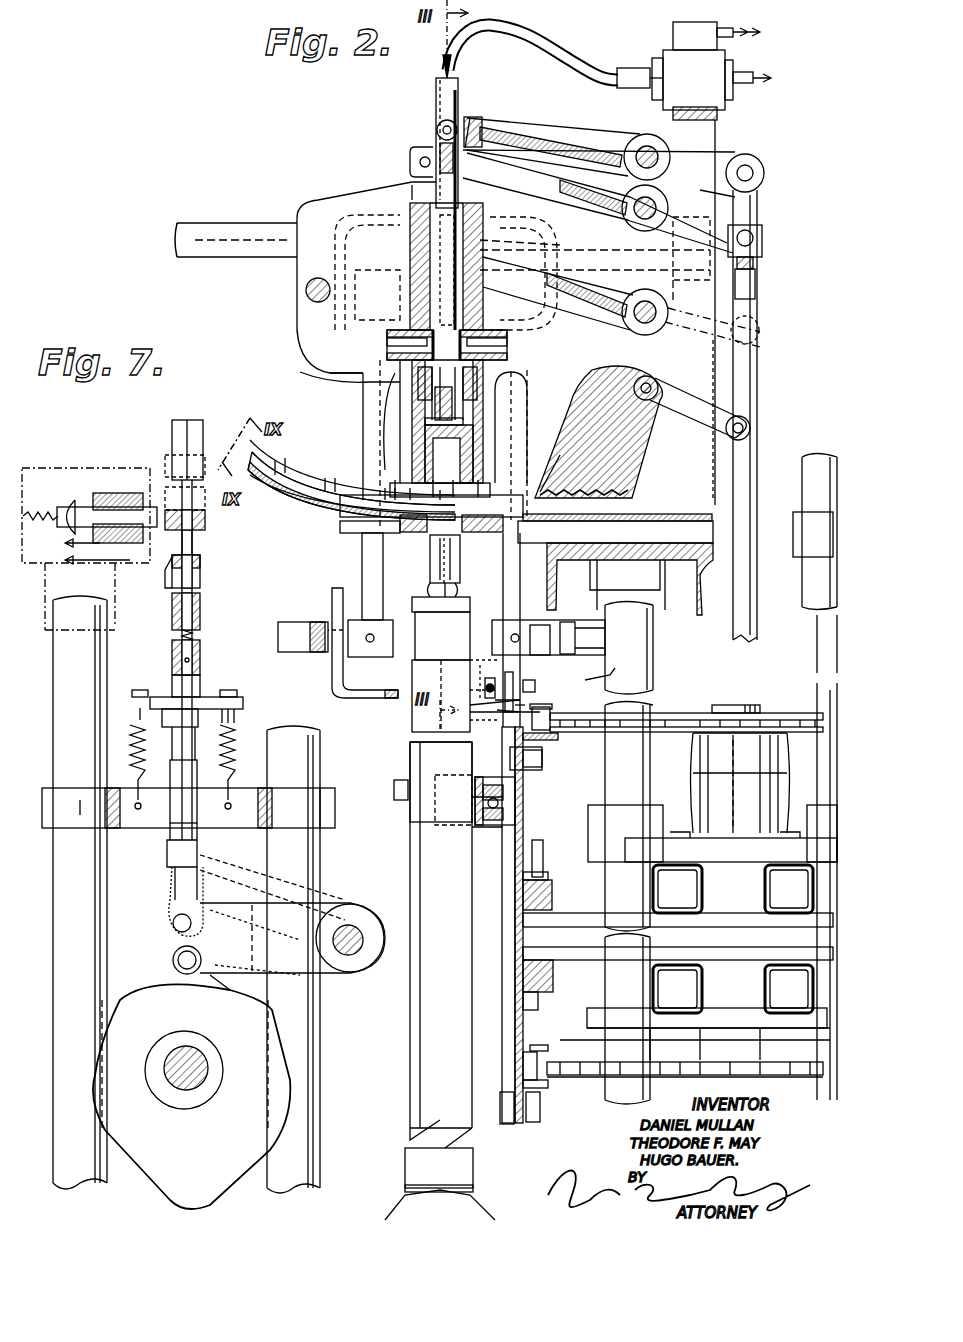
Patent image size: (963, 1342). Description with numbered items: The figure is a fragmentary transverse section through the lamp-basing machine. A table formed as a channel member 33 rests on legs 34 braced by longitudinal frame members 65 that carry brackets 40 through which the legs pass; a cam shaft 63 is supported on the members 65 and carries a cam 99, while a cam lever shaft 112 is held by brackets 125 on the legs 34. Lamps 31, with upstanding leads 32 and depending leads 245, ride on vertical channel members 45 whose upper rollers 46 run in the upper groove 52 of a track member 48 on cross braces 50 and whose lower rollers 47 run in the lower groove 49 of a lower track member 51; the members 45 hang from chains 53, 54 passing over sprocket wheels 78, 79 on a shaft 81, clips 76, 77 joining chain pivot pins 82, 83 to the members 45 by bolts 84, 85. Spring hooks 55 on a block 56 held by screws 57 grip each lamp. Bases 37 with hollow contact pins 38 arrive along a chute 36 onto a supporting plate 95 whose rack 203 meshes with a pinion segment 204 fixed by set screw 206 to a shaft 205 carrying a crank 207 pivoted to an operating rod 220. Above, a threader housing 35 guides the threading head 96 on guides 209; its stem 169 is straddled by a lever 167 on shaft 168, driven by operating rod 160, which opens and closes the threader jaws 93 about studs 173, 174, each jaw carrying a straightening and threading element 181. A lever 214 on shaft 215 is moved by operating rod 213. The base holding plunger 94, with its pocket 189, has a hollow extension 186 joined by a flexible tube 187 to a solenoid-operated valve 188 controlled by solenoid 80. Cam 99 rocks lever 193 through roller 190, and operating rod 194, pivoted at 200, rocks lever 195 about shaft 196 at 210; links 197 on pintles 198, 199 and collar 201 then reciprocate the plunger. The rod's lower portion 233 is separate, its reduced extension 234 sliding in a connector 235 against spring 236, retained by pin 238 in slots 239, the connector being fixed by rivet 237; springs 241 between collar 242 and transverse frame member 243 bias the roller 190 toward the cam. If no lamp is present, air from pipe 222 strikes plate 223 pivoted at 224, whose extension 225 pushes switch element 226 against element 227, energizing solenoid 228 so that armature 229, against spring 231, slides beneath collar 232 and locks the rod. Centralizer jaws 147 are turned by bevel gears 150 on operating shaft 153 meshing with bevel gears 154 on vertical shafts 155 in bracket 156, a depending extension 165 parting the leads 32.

In FIG. 2, the lamp 31 is at (415, 1043).
In FIG. 2, the upstanding leads 32 is at (452, 565).
In FIG. 2, the channel member 33 is at (698, 612).
In FIG. 2, the legs 34 is at (650, 688).
In FIG. 7, the legs 34 is at (70, 680).
In FIG. 2, the threader housing 35 is at (310, 210).
In FIG. 2, the chute 36 is at (268, 505).
In FIG. 2, the base 37 is at (305, 500).
In FIG. 2, the contact pins 38 is at (330, 442).
In FIG. 2, the brackets 40 is at (672, 800).
In FIG. 2, the channel members 45 is at (505, 950).
In FIG. 2, the roller 46 is at (545, 850).
In FIG. 2, the roller 47 is at (540, 1000).
In FIG. 2, the track member 48 is at (556, 895).
In FIG. 2, the lower groove 49 is at (555, 972).
In FIG. 2, the cross braces 50 is at (585, 918).
In FIG. 2, the lower track member 51 is at (570, 953).
In FIG. 2, the upper groove 52 is at (548, 874).
In FIG. 2, the chain 53 is at (555, 715).
In FIG. 2, the chain 54 is at (545, 1090).
In FIG. 2, the lamp-gripping hooks 55 is at (400, 782).
In FIG. 2, the block 56 is at (475, 850).
In FIG. 2, the screws 57 is at (520, 800).
In FIG. 7, the cam shaft 63 is at (190, 1090).
In FIG. 2, the longitudinal frame members 65 is at (700, 888).
In FIG. 2, the angular clip 76 is at (545, 758).
In FIG. 2, the angular clip 77 is at (540, 1120).
In FIG. 2, the sprocket wheel 78 is at (690, 713).
In FIG. 2, the sprocket wheel 79 is at (785, 1075).
In FIG. 2, the solenoid 80 is at (673, 25).
In FIG. 2, the shaft 81 is at (740, 706).
In FIG. 2, the pivot pin 82 is at (558, 737).
In FIG. 2, the pivot pin 83 is at (525, 1060).
In FIG. 2, the bolt 84 is at (538, 767).
In FIG. 2, the bolt 85 is at (507, 1125).
In FIG. 2, the threader jaws 93 is at (528, 395).
In FIG. 2, the base holding plunger 94 is at (418, 410).
In FIG. 2, the supporting plate 95 is at (548, 528).
In FIG. 2, the threading head 96 is at (360, 385).
In FIG. 7, the cam 99 is at (215, 1190).
In FIG. 7, the cam lever shaft 112 is at (355, 900).
In FIG. 7, the brackets 125 is at (250, 890).
In FIG. 2, the jaws 147 is at (315, 620).
In FIG. 2, the bevel gears 150 is at (360, 205).
In FIG. 2, the operating shaft 153 is at (578, 255).
In FIG. 2, the bevel gears 154 is at (305, 285).
In FIG. 2, the vertical shafts 155 is at (360, 562).
In FIG. 2, the bracket 156 is at (370, 415).
In FIG. 2, the operating rod 160 is at (760, 328).
In FIG. 2, the depending extension 165 is at (452, 550).
In FIG. 2, the lever 167 is at (640, 340).
In FIG. 2, the shaft 168 is at (640, 362).
In FIG. 2, the stem 169 is at (410, 200).
In FIG. 2, the stud 173 is at (375, 335).
In FIG. 2, the stud 174 is at (520, 345).
In FIG. 2, the straightening and threading element 181 is at (430, 545).
In FIG. 2, the hollow extension 186 is at (458, 85).
In FIG. 2, the flexible tube 187 is at (558, 70).
In FIG. 2, the solenoid-operated valve 188 is at (665, 58).
In FIG. 2, the pocket 189 is at (430, 432).
In FIG. 7, the roller 190 is at (172, 960).
In FIG. 7, the lever 193 is at (320, 995).
In FIG. 2, the operating rod 194 is at (758, 200).
In FIG. 7, the operating rod 194 is at (185, 420).
In FIG. 2, the lever 195 is at (570, 135).
In FIG. 2, the shaft 196 is at (645, 140).
In FIG. 2, the links 197 is at (436, 125).
In FIG. 2, the pintles 198 is at (468, 115).
In FIG. 2, the pintles 199 is at (488, 122).
In FIG. 7, the pivot 200 is at (173, 920).
In FIG. 2, the collar 201 is at (416, 150).
In FIG. 2, the rack 203 is at (548, 490).
In FIG. 2, the pinion segment 204 is at (600, 412).
In FIG. 2, the shaft 205 is at (665, 378).
In FIG. 2, the set screw 206 is at (660, 322).
In FIG. 2, the crank 207 is at (715, 395).
In FIG. 2, the guides 209 is at (462, 190).
In FIG. 2, the pivot 210 is at (748, 160).
In FIG. 2, the operating rod 213 is at (763, 243).
In FIG. 2, the lever 214 is at (760, 222).
In FIG. 2, the shaft 215 is at (665, 195).
In FIG. 2, the operating rod 220 is at (752, 425).
In FIG. 2, the pipe 222 is at (378, 705).
In FIG. 2, the plate 223 is at (490, 680).
In FIG. 2, the pivot 224 is at (480, 645).
In FIG. 2, the transverse extension 225 is at (475, 705).
In FIG. 2, the switch element 226 is at (480, 762).
In FIG. 2, the switch element 227 is at (560, 690).
In FIG. 7, the solenoid 228 is at (130, 493).
In FIG. 7, the armature 229 is at (85, 500).
In FIG. 7, the spring 231 is at (50, 500).
In FIG. 7, the collar 232 is at (205, 518).
In FIG. 7, the lower portion 233 is at (225, 765).
In FIG. 7, the reduced extension 234 is at (200, 545).
In FIG. 7, the hollow connector 235 is at (200, 610).
In FIG. 7, the spring 236 is at (194, 637).
In FIG. 7, the rivet 237 is at (172, 655).
In FIG. 7, the pin 238 is at (170, 565).
In FIG. 7, the slots 239 is at (200, 575).
In FIG. 7, the springs 241 is at (232, 725).
In FIG. 7, the collar 242 is at (205, 700).
In FIG. 7, the transverse frame member 243 is at (330, 800).
In FIG. 2, the leads 245 is at (440, 1207).